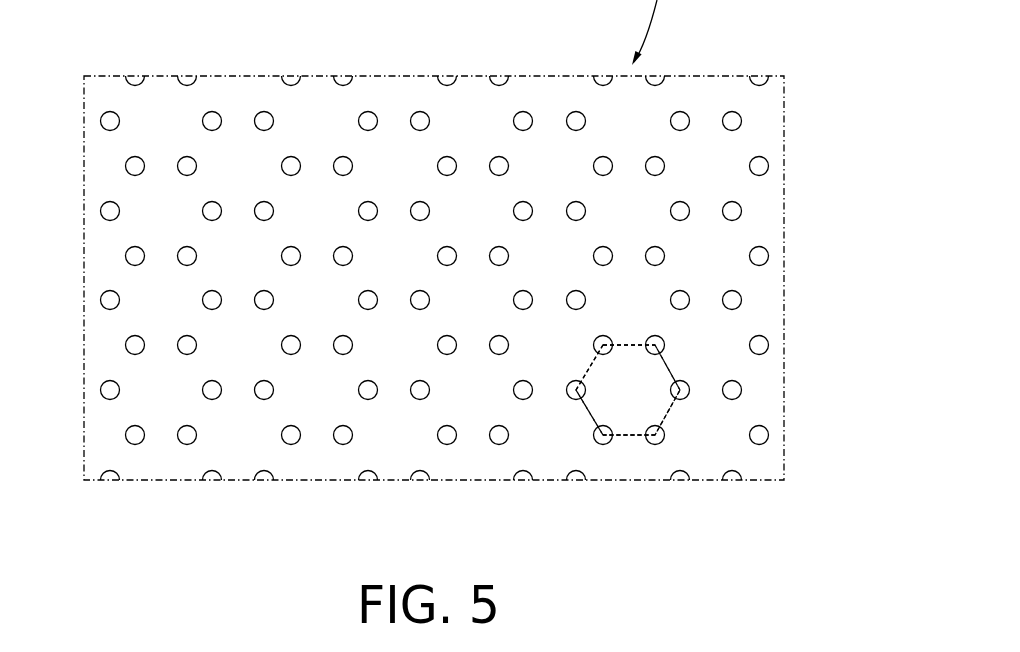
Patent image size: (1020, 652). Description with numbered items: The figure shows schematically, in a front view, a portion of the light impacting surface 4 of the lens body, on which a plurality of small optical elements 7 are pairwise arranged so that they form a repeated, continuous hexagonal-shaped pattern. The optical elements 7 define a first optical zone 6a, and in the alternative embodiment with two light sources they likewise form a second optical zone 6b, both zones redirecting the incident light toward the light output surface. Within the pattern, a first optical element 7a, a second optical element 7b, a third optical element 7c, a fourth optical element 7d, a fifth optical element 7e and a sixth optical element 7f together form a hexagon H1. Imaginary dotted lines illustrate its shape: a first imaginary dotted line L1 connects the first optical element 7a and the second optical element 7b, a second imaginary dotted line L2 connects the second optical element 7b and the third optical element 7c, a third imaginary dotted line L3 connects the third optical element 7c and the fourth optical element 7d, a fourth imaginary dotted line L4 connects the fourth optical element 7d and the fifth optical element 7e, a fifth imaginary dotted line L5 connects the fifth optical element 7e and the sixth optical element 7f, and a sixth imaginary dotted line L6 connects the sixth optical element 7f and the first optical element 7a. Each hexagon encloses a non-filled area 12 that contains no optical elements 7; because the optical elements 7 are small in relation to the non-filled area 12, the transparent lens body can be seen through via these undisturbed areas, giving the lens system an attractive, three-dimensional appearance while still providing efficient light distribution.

The light impacting surface 4 is at (527, 117).
The first optical zone 6a is at (759, 58).
The second optical zone 6b is at (703, 103).
The optical element 7 is at (768, 164).
The first optical element 7a is at (605, 342).
The second optical element 7b is at (663, 345).
The third optical element 7c is at (686, 396).
The fourth optical element 7d is at (662, 443).
The fifth optical element 7e is at (593, 438).
The sixth optical element 7f is at (568, 396).
The non-filled area 12 is at (636, 418).
The first imaginary dotted line L1 is at (622, 346).
The second imaginary dotted line L2 is at (670, 371).
The third imaginary dotted line L3 is at (670, 413).
The fourth imaginary dotted line L4 is at (615, 440).
The fifth imaginary dotted line L5 is at (588, 414).
The sixth imaginary dotted line L6 is at (590, 366).
The hexagon H1 is at (720, 346).